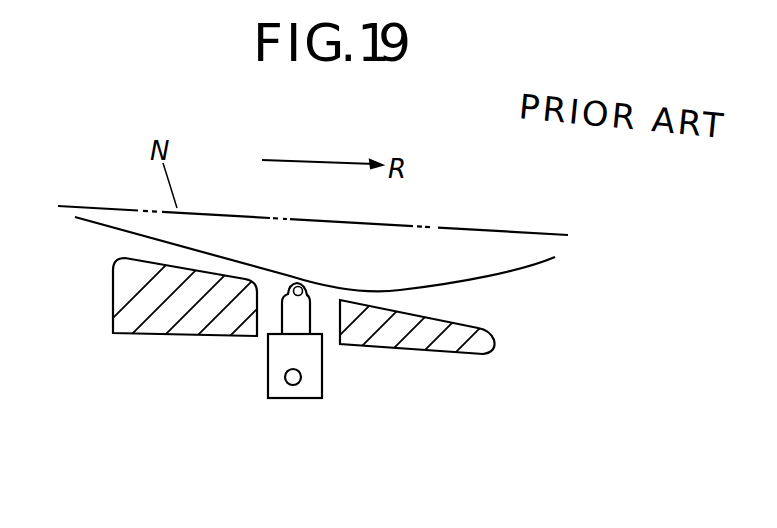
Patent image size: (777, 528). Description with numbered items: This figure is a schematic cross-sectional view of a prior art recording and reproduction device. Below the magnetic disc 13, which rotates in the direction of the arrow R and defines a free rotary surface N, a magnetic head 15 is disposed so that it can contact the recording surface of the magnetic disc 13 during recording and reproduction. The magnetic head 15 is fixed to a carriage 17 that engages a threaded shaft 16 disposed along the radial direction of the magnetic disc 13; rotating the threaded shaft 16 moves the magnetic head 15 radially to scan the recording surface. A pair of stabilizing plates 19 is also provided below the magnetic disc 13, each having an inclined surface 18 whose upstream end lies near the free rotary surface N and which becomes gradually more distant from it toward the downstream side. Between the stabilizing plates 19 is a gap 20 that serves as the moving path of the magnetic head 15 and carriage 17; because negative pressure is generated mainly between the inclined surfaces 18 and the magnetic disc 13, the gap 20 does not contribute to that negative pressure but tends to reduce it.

The magnetic disc 13 is at (557, 260).
The magnetic head 15 is at (313, 320).
The threaded shaft 16 is at (295, 386).
The carriage 17 is at (318, 377).
The inclined surface 18 is at (148, 260).
The stabilizing plate 19 is at (222, 340).
The gap 20 is at (265, 325).